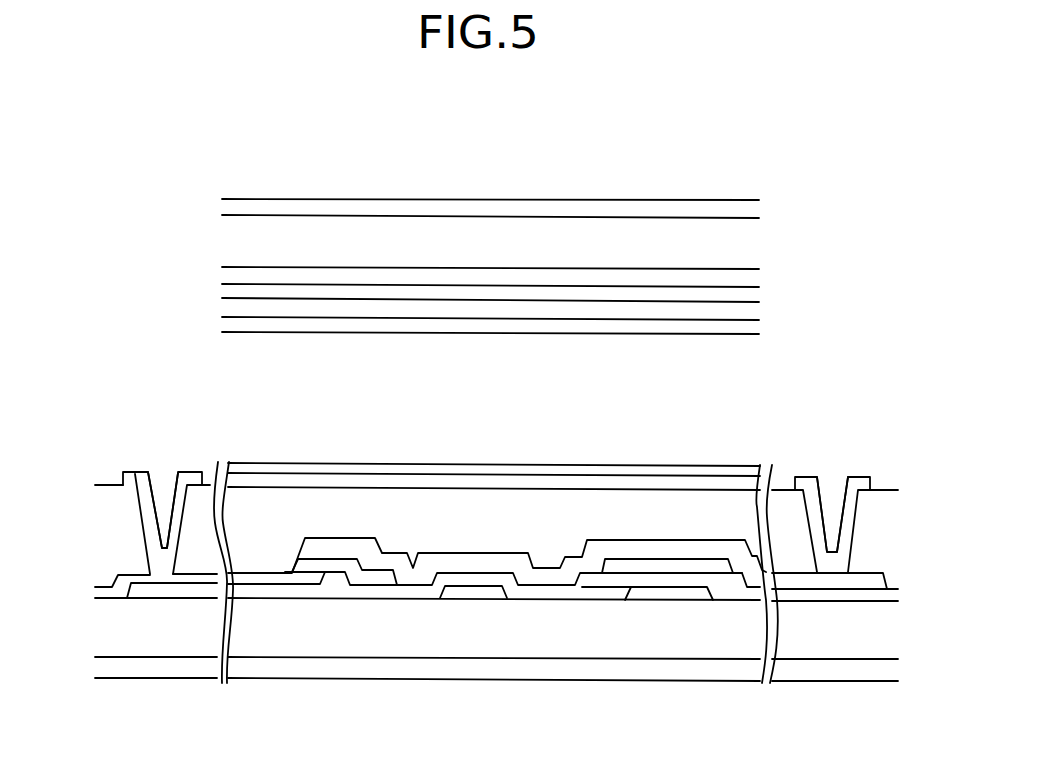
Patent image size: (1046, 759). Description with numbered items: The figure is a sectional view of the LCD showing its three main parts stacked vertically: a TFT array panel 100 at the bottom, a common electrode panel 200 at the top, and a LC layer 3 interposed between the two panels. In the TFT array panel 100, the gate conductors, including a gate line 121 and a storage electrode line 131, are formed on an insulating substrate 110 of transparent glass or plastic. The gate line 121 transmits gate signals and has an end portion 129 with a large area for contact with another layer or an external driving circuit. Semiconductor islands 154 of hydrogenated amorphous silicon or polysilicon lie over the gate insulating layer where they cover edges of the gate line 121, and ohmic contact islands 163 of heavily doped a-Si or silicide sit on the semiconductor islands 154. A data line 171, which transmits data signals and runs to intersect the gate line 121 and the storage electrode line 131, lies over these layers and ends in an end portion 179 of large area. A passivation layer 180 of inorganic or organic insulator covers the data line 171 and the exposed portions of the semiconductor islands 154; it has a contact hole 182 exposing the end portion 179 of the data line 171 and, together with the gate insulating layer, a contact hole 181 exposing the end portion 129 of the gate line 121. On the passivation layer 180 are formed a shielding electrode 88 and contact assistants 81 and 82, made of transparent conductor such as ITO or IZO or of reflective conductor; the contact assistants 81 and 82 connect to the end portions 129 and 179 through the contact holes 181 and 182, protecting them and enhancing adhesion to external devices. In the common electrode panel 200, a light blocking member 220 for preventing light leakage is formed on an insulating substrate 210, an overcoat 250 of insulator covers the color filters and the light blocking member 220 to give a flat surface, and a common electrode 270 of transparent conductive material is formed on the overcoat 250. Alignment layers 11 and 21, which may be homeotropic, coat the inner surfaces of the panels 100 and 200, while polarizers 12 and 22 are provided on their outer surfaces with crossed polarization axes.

The LC layer 3 is at (212, 330).
The alignment layer 11 is at (378, 467).
The polarizer 12 is at (118, 666).
The alignment layer 21 is at (268, 326).
The polarizer 22 is at (224, 207).
The contact assistant 81 is at (132, 472).
The contact assistant 82 is at (858, 480).
The shielding electrode 88 is at (282, 478).
The TFT array panel 100 is at (88, 463).
The insulating substrate 110 is at (531, 636).
The gate line 121 is at (275, 592).
The end portion 129 is at (170, 592).
The storage electrode line 131 is at (473, 592).
The semiconductor island 154 is at (382, 582).
The ohmic contact island 163 is at (328, 560).
The data line 171 is at (467, 553).
The end portion 179 is at (827, 582).
The passivation layer 180 is at (548, 515).
The contact hole 181 is at (183, 508).
The contact hole 182 is at (810, 513).
The common electrode panel 200 is at (212, 217).
The insulating substrate 210 is at (600, 247).
The light blocking member 220 is at (425, 277).
The overcoat 250 is at (512, 295).
The common electrode 270 is at (350, 310).